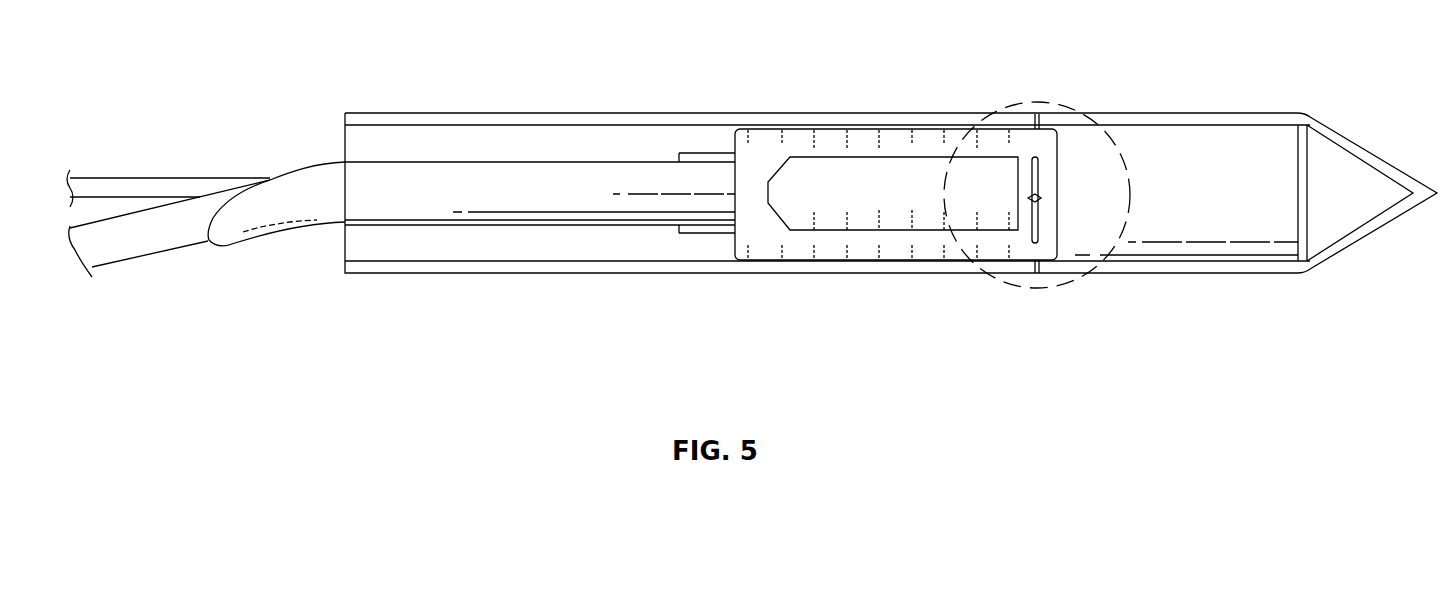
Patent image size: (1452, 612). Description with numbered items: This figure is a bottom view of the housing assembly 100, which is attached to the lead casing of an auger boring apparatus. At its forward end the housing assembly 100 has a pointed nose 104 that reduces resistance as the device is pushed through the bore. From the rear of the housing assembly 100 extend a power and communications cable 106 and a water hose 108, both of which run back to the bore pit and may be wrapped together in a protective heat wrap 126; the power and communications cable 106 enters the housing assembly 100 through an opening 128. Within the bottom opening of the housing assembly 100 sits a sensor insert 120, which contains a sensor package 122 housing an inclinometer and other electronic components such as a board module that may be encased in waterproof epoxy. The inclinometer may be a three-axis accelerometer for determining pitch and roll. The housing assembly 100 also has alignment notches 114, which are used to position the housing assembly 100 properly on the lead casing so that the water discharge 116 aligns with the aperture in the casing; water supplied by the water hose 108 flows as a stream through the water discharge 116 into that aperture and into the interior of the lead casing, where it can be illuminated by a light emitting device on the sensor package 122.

The housing assembly 100 is at (1283, 71).
The pointed nose 104 is at (1343, 212).
The power and communications cable 106 is at (132, 183).
The water hose 108 is at (119, 240).
The alignment notches 114 is at (1037, 113).
The water discharge 116 is at (1040, 205).
The sensor insert 120 is at (763, 140).
The sensor package 122 is at (809, 218).
The protective heat wrap 126 is at (442, 197).
The opening 128 is at (345, 143).